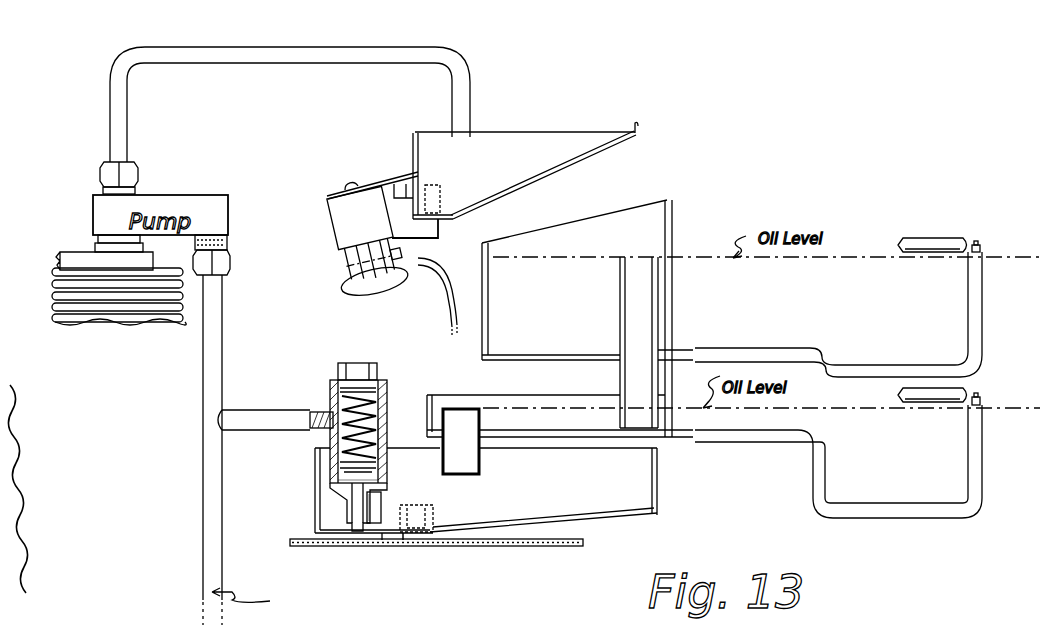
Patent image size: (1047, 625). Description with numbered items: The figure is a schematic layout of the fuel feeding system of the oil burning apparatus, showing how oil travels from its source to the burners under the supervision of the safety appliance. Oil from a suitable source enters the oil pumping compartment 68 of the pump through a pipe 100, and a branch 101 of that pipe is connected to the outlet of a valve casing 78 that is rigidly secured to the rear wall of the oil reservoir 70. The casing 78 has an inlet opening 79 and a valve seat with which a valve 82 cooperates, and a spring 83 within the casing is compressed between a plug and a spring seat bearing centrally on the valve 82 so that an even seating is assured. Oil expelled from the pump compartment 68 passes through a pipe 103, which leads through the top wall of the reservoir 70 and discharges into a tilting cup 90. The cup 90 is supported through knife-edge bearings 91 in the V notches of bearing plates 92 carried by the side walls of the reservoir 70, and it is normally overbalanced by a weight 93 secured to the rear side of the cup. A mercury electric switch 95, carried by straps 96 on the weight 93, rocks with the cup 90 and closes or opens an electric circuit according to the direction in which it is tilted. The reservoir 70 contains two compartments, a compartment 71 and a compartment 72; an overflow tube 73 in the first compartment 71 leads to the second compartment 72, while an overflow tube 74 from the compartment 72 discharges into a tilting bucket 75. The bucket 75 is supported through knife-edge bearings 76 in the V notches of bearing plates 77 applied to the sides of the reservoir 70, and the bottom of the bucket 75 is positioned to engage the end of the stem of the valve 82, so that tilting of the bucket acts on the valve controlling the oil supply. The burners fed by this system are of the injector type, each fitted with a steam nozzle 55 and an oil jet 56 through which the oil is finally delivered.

The steam nozzle 55 is at (935, 240).
The oil jet 56 is at (977, 252).
The oil pumping compartment 68 is at (148, 325).
The oil reservoir 70 is at (550, 547).
The compartment 71 is at (492, 333).
The compartment 72 is at (560, 416).
The overflow tube 73 is at (633, 310).
The overflow tube 74 is at (470, 420).
The tilting bucket 75 is at (522, 490).
The knife-edge bearings 76 is at (417, 507).
The bearing plates 77 is at (400, 543).
The valve casing 78 is at (388, 440).
The inlet opening 79 is at (378, 500).
The valve 82 is at (333, 485).
The spring 83 is at (388, 413).
The tilting cup 90 is at (515, 180).
The knife-edge bearings 91 is at (413, 182).
The bearing plates 92 is at (392, 198).
The weight 93 is at (333, 212).
The mercury electric switch 95 is at (374, 279).
The straps 96 is at (380, 246).
The pipe 100 is at (217, 513).
The branch 101 is at (302, 412).
The pipe 103 is at (287, 53).